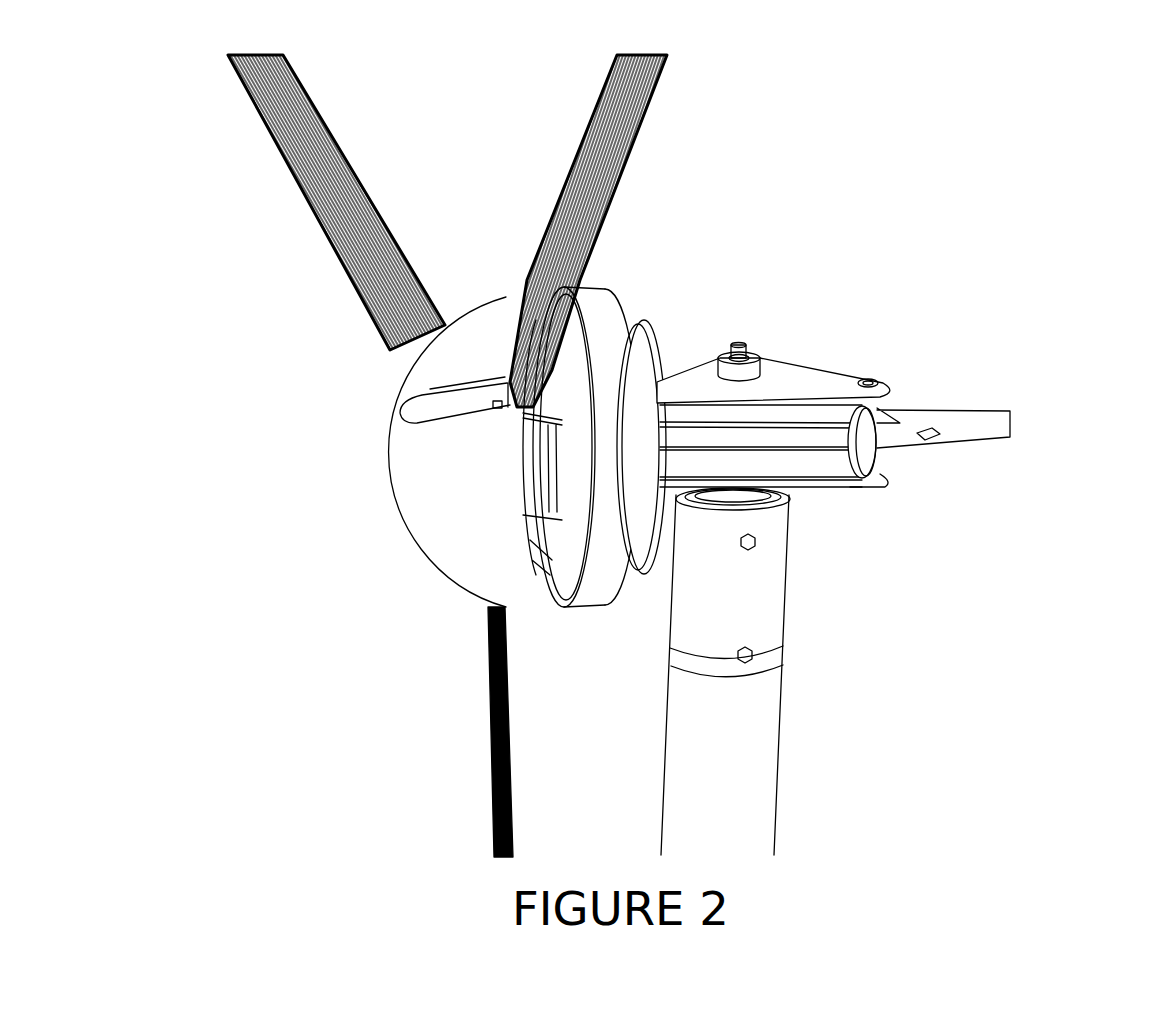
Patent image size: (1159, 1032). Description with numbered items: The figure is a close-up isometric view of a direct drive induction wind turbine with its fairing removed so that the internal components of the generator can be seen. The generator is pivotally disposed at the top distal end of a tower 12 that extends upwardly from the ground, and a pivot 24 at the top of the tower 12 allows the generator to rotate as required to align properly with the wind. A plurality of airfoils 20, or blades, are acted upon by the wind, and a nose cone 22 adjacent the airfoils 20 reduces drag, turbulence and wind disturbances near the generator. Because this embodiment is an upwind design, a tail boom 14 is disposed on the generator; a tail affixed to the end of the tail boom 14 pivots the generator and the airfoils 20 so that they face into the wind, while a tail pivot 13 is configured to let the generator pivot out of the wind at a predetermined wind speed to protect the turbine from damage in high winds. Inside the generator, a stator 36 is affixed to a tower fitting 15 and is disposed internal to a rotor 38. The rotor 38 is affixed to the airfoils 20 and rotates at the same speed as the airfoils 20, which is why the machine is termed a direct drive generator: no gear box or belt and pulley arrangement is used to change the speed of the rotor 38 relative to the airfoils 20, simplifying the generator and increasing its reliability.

The tower 12 is at (767, 751).
The tail pivot 13 is at (876, 377).
The tail boom 14 is at (1010, 432).
The tower fitting 15 is at (782, 382).
The airfoils 20 is at (257, 99).
The nose cone 22 is at (352, 422).
The pivot 24 is at (778, 527).
The stator 36 is at (643, 323).
The rotor 38 is at (590, 587).